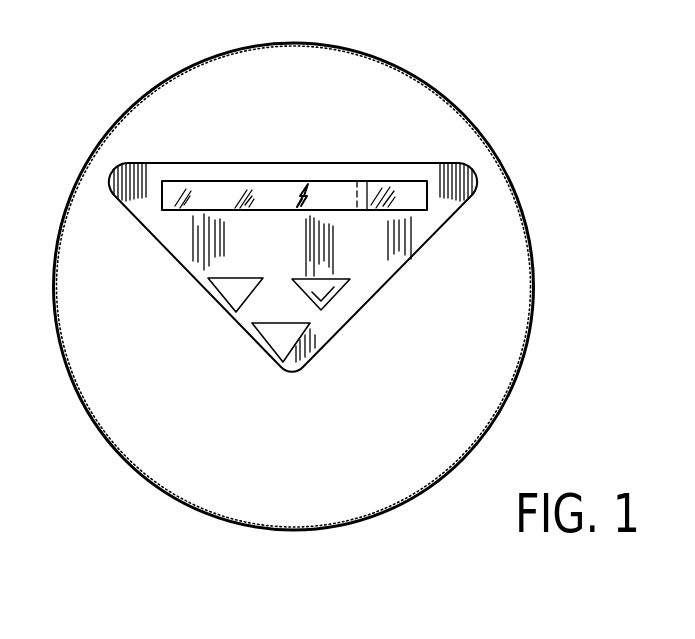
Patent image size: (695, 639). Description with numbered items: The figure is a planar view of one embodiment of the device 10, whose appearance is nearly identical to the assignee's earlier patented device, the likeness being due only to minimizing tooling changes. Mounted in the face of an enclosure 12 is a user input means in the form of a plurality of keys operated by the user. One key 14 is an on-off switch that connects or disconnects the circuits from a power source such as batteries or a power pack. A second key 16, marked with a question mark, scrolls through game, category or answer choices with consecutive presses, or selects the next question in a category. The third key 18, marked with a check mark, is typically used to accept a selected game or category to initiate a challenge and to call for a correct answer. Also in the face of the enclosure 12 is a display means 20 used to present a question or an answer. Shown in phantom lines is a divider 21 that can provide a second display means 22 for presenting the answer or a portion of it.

The device 10 is at (93, 83).
The enclosure 12 is at (495, 157).
The key 14 is at (238, 305).
The second key 16 is at (296, 370).
The third key 18 is at (335, 279).
The display means 20 is at (257, 182).
The divider 21 is at (357, 210).
The second display means 22 is at (415, 207).